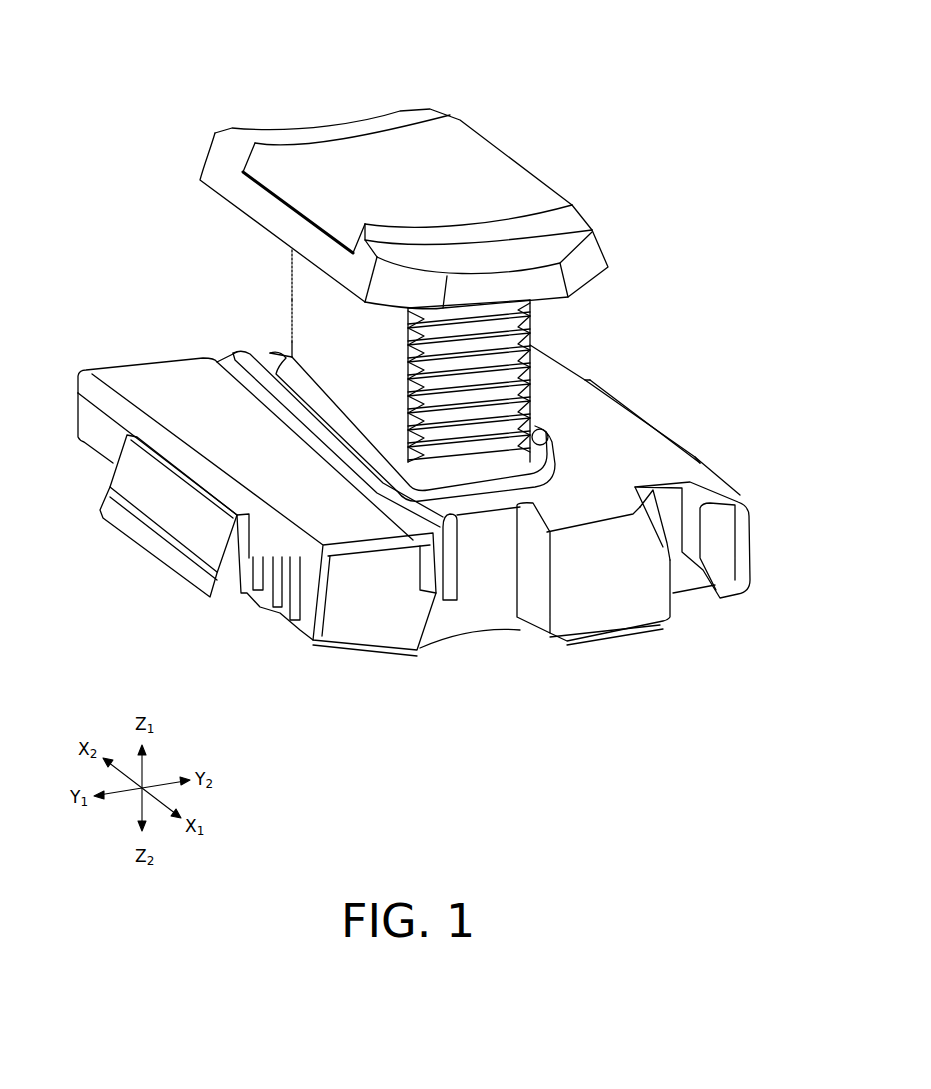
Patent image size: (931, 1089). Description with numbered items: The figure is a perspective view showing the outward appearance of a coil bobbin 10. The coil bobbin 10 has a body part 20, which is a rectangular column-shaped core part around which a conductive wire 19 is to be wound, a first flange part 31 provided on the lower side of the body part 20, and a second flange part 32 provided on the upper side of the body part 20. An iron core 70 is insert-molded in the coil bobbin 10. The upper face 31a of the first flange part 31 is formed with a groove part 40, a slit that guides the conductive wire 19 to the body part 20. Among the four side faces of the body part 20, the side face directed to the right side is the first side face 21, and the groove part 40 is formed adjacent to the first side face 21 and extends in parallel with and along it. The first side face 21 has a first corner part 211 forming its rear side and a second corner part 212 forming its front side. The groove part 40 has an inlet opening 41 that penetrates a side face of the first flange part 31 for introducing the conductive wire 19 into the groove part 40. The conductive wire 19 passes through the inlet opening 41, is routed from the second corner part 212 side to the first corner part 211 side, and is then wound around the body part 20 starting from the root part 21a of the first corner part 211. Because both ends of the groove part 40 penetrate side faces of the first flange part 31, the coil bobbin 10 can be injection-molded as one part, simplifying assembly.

The coil bobbin 10 is at (255, 110).
The iron core 70 is at (495, 172).
The second flange part 32 is at (603, 247).
The first corner part 211 is at (292, 288).
The root part 21a is at (292, 348).
The groove part 40 is at (250, 397).
The body part 20 is at (548, 387).
The first flange part 31 is at (673, 418).
The first side face 21 is at (360, 358).
The second corner part 212 is at (405, 372).
The upper face 31a is at (247, 450).
The conductive wire 19 is at (437, 477).
The inlet opening 41 is at (463, 558).